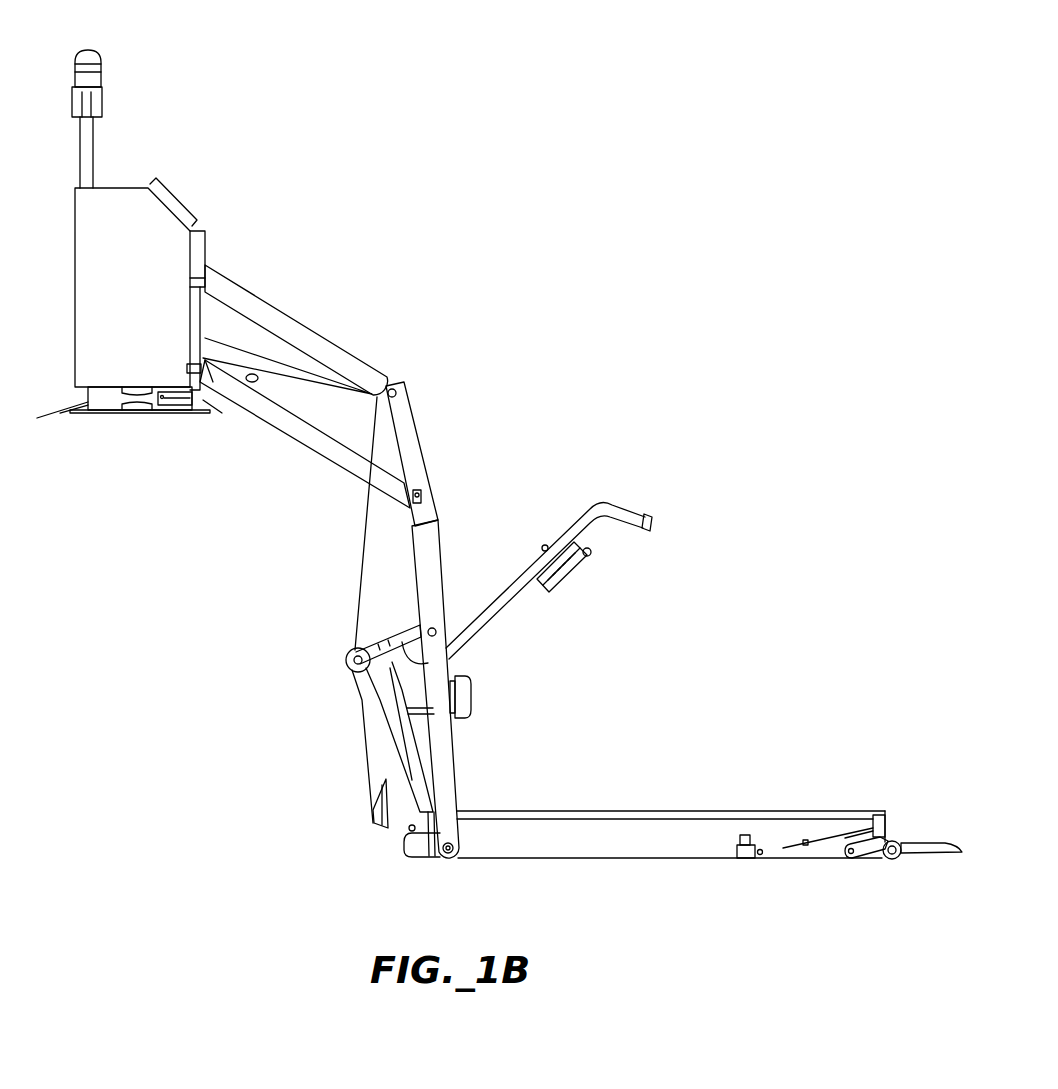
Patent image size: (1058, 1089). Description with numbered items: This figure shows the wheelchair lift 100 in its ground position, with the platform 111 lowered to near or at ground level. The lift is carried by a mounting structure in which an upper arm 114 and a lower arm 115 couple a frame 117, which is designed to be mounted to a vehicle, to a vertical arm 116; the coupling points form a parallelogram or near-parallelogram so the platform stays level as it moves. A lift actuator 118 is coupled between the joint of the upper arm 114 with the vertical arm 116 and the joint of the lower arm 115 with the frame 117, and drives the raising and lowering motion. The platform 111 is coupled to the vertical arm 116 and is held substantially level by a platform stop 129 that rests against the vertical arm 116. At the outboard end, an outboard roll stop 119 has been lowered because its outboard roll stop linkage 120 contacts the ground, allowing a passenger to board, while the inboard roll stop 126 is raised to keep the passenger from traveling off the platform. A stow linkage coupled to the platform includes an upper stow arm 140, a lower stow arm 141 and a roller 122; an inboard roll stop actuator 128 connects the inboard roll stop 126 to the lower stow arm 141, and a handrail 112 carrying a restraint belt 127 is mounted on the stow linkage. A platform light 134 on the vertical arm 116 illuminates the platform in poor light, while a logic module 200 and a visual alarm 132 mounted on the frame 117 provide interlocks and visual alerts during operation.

The wheelchair lift 100 is at (577, 30).
The platform 111 is at (655, 828).
The handrail 112 is at (630, 518).
The upper arm 114 is at (378, 372).
The lower arm 115 is at (306, 434).
The vertical arm 116 is at (400, 422).
The frame 117 is at (184, 242).
The lift actuator 118 is at (305, 370).
The outboard roll stop 119 is at (923, 848).
The outboard roll stop linkage 120 is at (860, 862).
The roller 122 is at (350, 654).
The inboard roll stop 126 is at (363, 757).
The restraint belt 127 is at (590, 573).
The inboard roll stop actuator 128 is at (385, 781).
The platform stop 129 is at (417, 841).
The visual alarm 132 is at (93, 48).
The platform light 134 is at (475, 695).
The upper stow arm 140 is at (402, 627).
The lower stow arm 141 is at (370, 705).
The logic module 200 is at (165, 186).